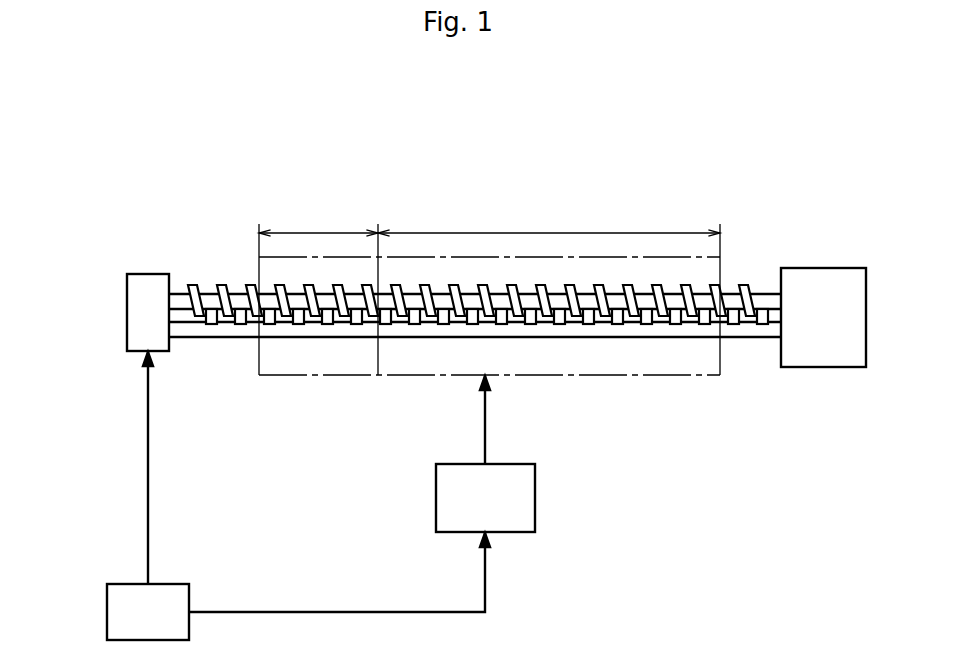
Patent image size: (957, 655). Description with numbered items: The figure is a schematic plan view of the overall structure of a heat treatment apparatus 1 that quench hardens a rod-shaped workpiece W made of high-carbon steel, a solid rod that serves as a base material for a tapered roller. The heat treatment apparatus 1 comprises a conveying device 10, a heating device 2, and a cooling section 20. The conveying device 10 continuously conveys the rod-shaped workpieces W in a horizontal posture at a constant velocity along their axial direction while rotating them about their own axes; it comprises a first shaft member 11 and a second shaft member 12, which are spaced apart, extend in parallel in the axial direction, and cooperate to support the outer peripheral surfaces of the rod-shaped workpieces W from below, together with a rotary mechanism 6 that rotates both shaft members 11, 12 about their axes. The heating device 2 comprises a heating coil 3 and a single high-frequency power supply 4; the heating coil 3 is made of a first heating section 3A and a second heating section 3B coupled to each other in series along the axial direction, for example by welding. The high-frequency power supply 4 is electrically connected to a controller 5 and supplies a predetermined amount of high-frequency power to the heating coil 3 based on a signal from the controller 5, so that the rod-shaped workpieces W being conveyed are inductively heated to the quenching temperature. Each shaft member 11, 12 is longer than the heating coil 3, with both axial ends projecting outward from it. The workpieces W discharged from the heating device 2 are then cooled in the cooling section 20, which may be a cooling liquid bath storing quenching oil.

The heat treatment apparatus 1 is at (628, 194).
The heating device 2 is at (598, 407).
The heating coil 3 is at (448, 213).
The first heating section 3A is at (319, 232).
The second heating section 3B is at (529, 232).
The high-frequency power supply 4 is at (536, 497).
The controller 5 is at (107, 611).
The rotary mechanism 6 is at (138, 313).
The conveying device 10 is at (191, 275).
The first shaft member 11 is at (214, 341).
The second shaft member 12 is at (211, 290).
The cooling section 20 is at (823, 281).
The rod-shaped workpiece W is at (767, 320).